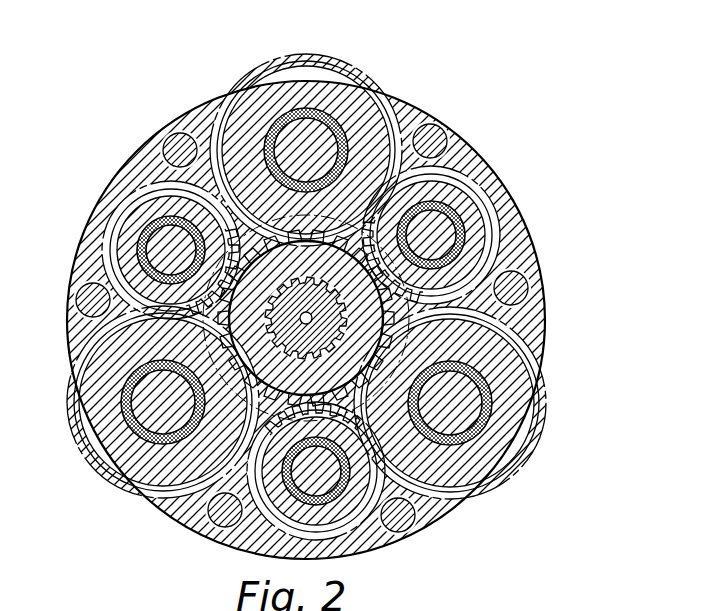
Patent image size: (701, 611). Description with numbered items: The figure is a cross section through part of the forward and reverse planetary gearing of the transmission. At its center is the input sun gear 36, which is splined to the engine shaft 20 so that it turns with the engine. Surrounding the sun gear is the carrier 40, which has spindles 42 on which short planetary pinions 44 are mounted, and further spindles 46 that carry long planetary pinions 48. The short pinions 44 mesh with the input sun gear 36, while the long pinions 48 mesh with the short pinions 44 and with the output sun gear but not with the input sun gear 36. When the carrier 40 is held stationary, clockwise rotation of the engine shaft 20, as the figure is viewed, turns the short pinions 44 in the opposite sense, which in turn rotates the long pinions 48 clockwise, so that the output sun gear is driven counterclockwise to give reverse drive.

The engine shaft 20 is at (260, 315).
The input sun gear 36 is at (262, 372).
The carrier 40 is at (460, 134).
The spindles 42 is at (308, 117).
The short planetary pinions 44 is at (348, 94).
The spindles 46 is at (458, 190).
The long planetary pinions 48 is at (470, 225).